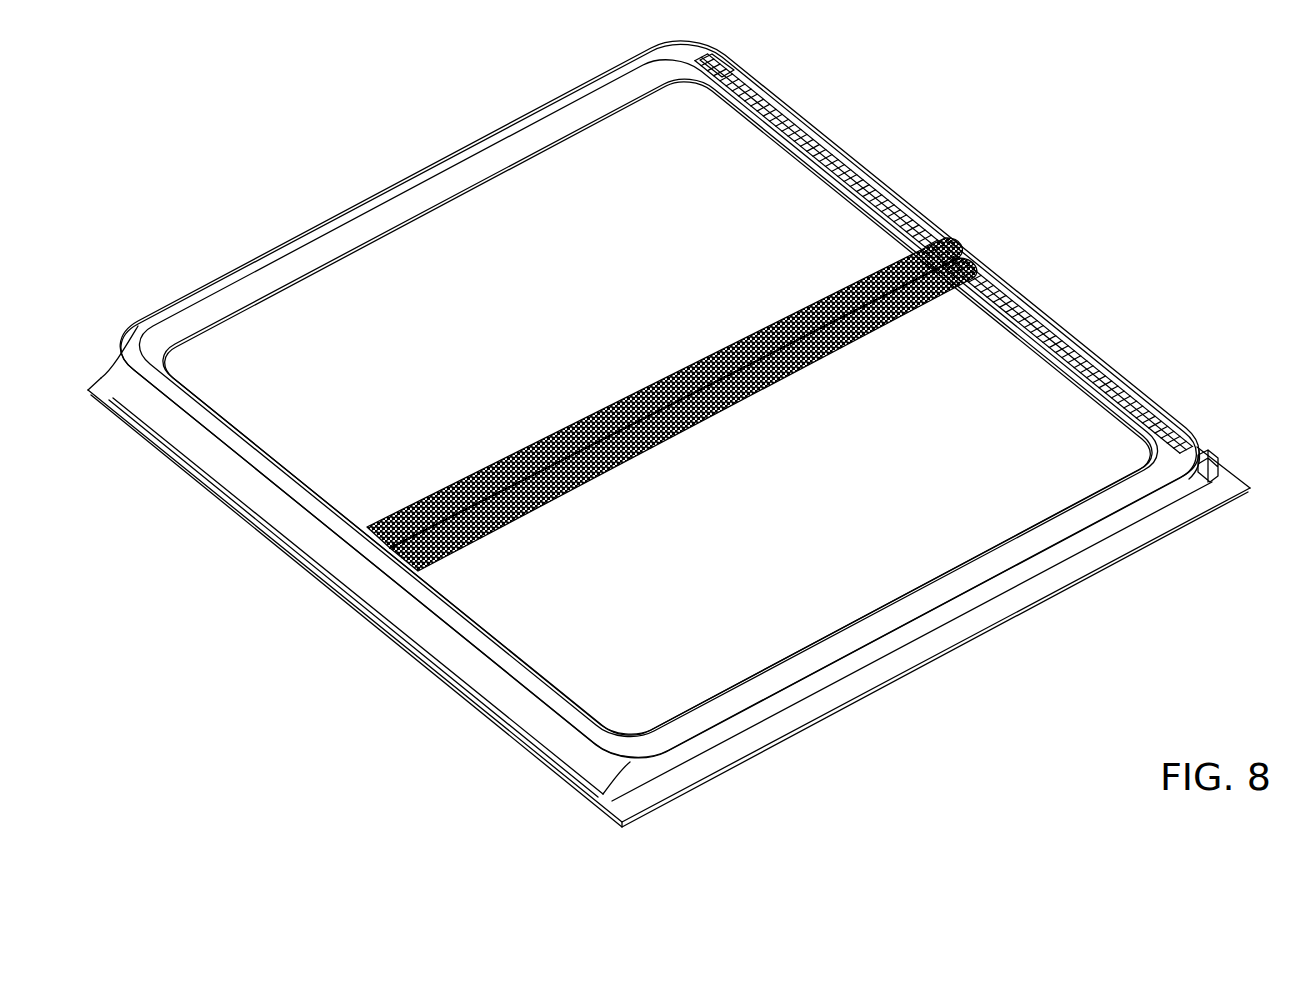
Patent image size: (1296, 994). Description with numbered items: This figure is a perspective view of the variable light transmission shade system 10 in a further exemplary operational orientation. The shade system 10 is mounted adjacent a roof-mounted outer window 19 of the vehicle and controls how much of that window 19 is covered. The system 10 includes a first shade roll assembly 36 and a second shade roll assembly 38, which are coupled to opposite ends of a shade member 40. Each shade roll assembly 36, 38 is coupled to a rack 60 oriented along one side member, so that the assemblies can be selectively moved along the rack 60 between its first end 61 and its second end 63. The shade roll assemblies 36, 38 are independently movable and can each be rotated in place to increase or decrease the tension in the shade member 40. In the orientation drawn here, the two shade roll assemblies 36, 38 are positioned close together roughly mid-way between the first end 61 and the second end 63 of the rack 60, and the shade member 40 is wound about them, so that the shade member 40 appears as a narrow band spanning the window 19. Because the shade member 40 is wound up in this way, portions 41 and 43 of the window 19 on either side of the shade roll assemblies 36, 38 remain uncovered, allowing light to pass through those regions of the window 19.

The variable light transmission shade system 10 is at (689, 431).
The outer window 19 is at (607, 138).
The first shade roll assembly 36 is at (672, 404).
The second shade roll assembly 38 is at (836, 344).
The shade member 40 is at (627, 424).
The portion of window 41 is at (587, 267).
The portion of window 43 is at (763, 496).
The rack 60 is at (898, 195).
The first end of rack 61 is at (729, 63).
The second end of rack 63 is at (1218, 436).